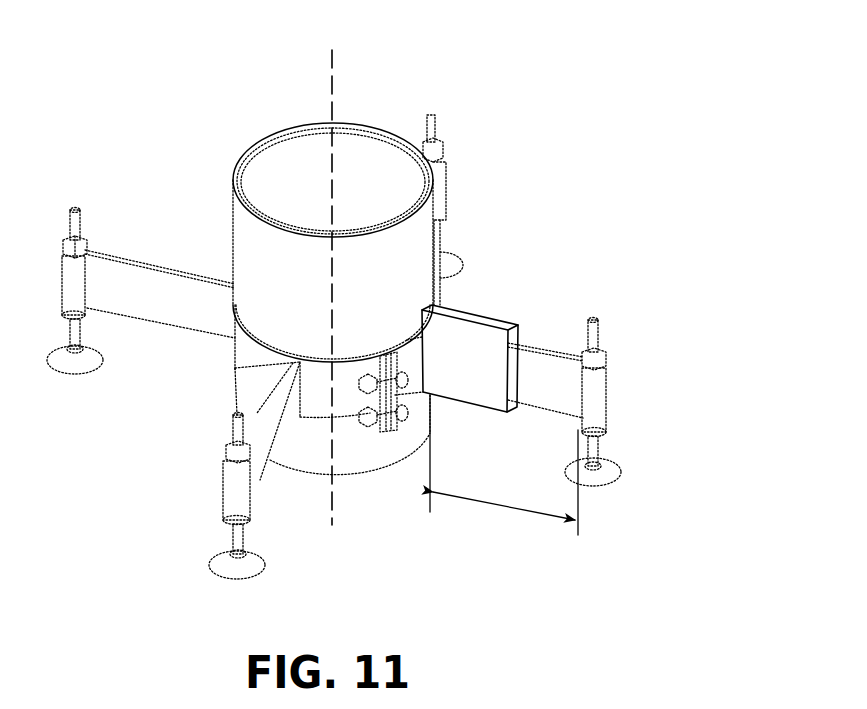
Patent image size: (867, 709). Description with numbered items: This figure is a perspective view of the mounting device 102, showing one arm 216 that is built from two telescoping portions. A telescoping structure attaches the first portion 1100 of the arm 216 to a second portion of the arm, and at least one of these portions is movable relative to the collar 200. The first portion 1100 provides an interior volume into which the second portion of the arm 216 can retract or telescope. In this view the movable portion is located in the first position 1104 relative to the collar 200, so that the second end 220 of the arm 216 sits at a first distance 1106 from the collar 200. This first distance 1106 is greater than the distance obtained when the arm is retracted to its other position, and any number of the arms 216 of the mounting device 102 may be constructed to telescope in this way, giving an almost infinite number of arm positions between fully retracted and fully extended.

The mounting device 102 is at (172, 84).
The collar 200 is at (232, 368).
The arm 216 is at (167, 263).
The second end 220 is at (572, 428).
The first portion 1100 is at (473, 315).
The first position 1104 is at (645, 389).
The first distance 1106 is at (543, 516).